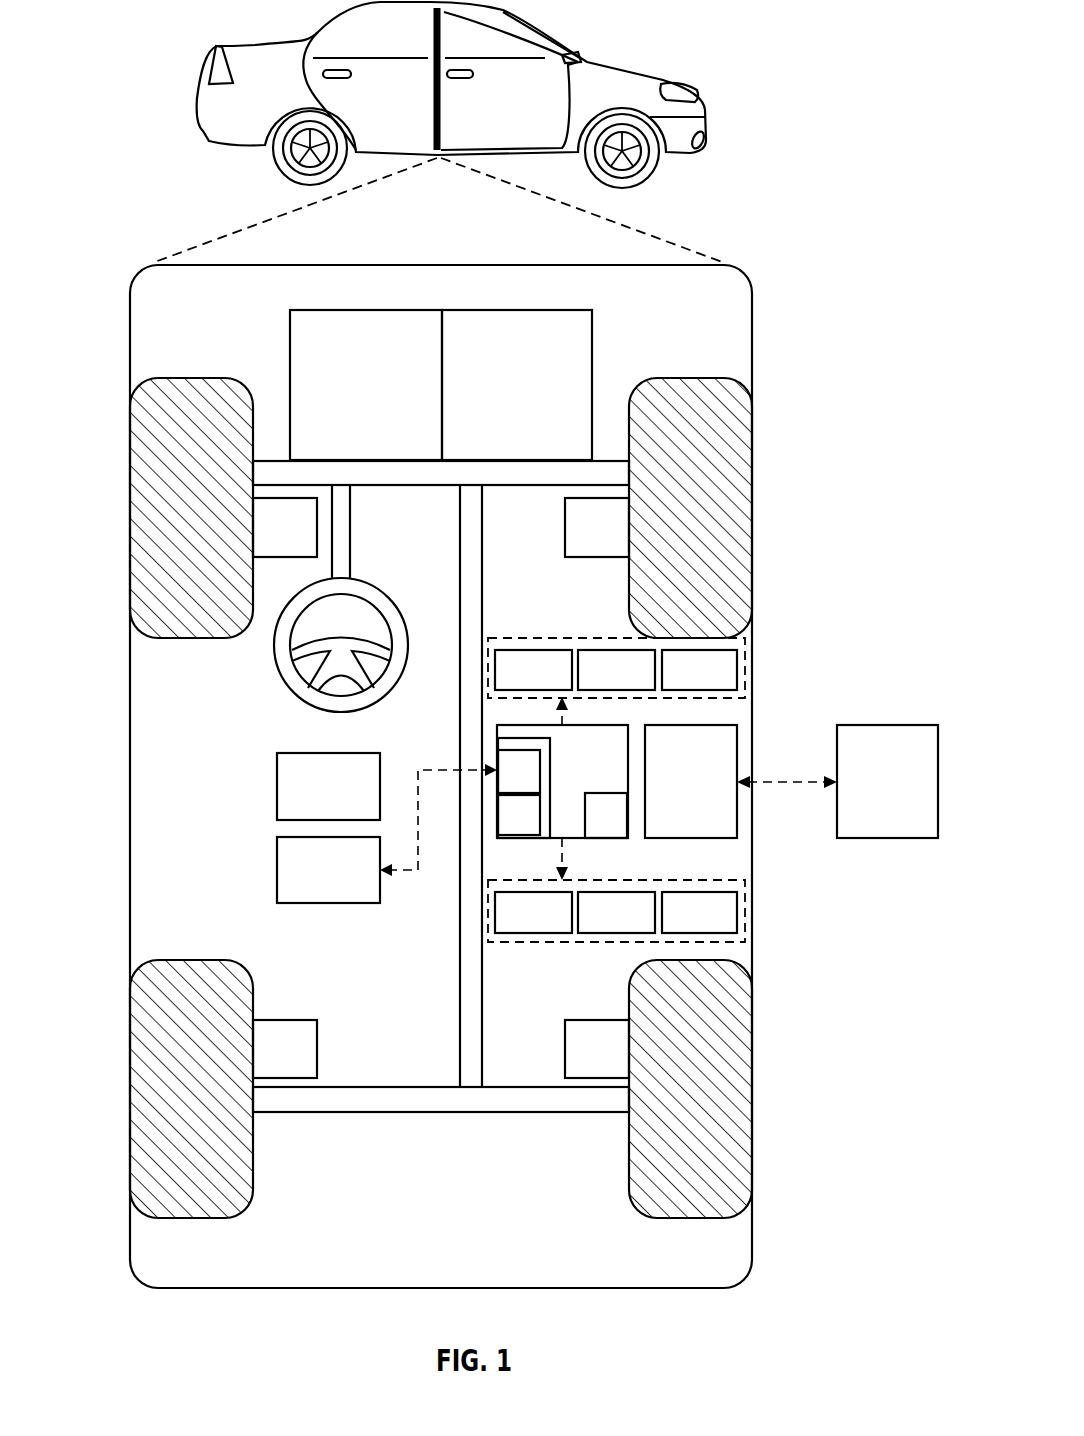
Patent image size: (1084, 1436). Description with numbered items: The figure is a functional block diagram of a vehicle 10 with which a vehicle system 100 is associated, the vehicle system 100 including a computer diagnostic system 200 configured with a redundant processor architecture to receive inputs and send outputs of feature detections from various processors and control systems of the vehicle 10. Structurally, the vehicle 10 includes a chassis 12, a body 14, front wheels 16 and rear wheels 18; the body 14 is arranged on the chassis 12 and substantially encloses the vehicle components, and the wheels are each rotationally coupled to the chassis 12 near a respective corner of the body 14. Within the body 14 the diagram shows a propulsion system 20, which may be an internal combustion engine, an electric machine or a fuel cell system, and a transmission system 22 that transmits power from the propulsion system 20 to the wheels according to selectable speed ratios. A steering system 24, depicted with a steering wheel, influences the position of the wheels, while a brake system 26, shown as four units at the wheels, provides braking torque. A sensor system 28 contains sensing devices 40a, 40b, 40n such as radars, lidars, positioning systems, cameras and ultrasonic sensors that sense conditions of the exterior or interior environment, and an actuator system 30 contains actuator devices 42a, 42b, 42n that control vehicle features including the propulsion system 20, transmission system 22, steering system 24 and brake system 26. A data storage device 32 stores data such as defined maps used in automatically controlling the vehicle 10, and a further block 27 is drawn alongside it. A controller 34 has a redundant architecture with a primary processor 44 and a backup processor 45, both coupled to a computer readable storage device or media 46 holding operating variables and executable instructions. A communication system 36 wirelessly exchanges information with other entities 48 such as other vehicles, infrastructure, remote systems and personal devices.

The vehicle 10 is at (208, 78).
The vehicle system 100 is at (660, 211).
The chassis 12 is at (460, 955).
The body 14 is at (130, 735).
The front wheels 16 is at (195, 378).
The rear wheels 18 is at (190, 1218).
The propulsion system 20 is at (352, 403).
The transmission system 22 is at (503, 403).
The steering system 24 is at (360, 551).
The brake system 26 is at (271, 543).
The sensor module 27 is at (314, 802).
The sensor system 28 is at (616, 652).
The actuator system 30 is at (616, 931).
The data storage device 32 is at (314, 886).
The controller 34 is at (578, 763).
The communication system 36 is at (677, 797).
The sensing device 40a is at (513, 686).
The sensing device 40b is at (596, 686).
The sensing device 40n is at (679, 686).
The actuator device 42a is at (513, 928).
The actuator device 42b is at (596, 928).
The actuator device 42n is at (679, 928).
The processor 44 is at (505, 830).
The processor 45 is at (505, 786).
The computer readable storage device or media 46 is at (592, 830).
The other entities 48 is at (874, 797).
The computer diagnostic system 200 is at (517, 762).